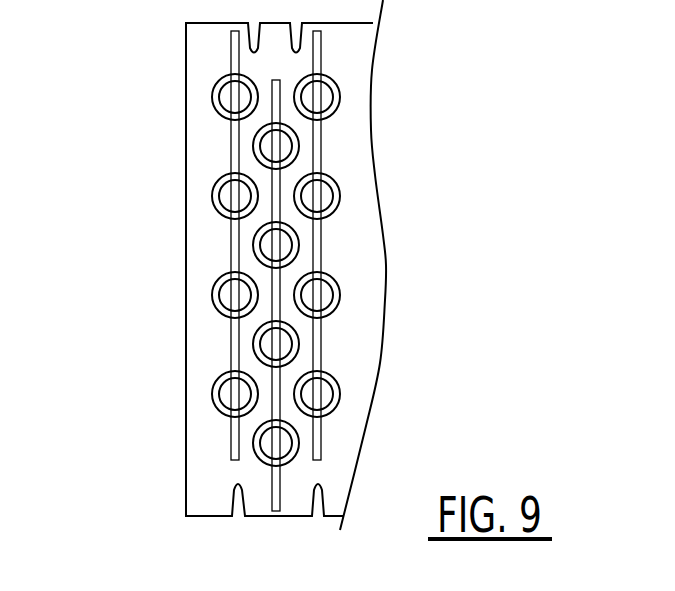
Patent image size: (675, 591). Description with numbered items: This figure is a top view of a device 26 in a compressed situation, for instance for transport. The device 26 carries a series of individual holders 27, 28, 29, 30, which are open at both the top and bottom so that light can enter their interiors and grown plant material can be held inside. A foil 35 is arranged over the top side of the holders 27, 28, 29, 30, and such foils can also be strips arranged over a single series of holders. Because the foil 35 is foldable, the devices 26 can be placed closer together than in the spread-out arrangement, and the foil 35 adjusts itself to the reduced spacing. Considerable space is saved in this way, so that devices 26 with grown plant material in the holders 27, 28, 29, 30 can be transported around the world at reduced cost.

The device 26 is at (412, 143).
The holder 27 is at (340, 90).
The holder 28 is at (340, 190).
The holder 29 is at (340, 297).
The holder 30 is at (340, 395).
The foil 35 is at (202, 47).